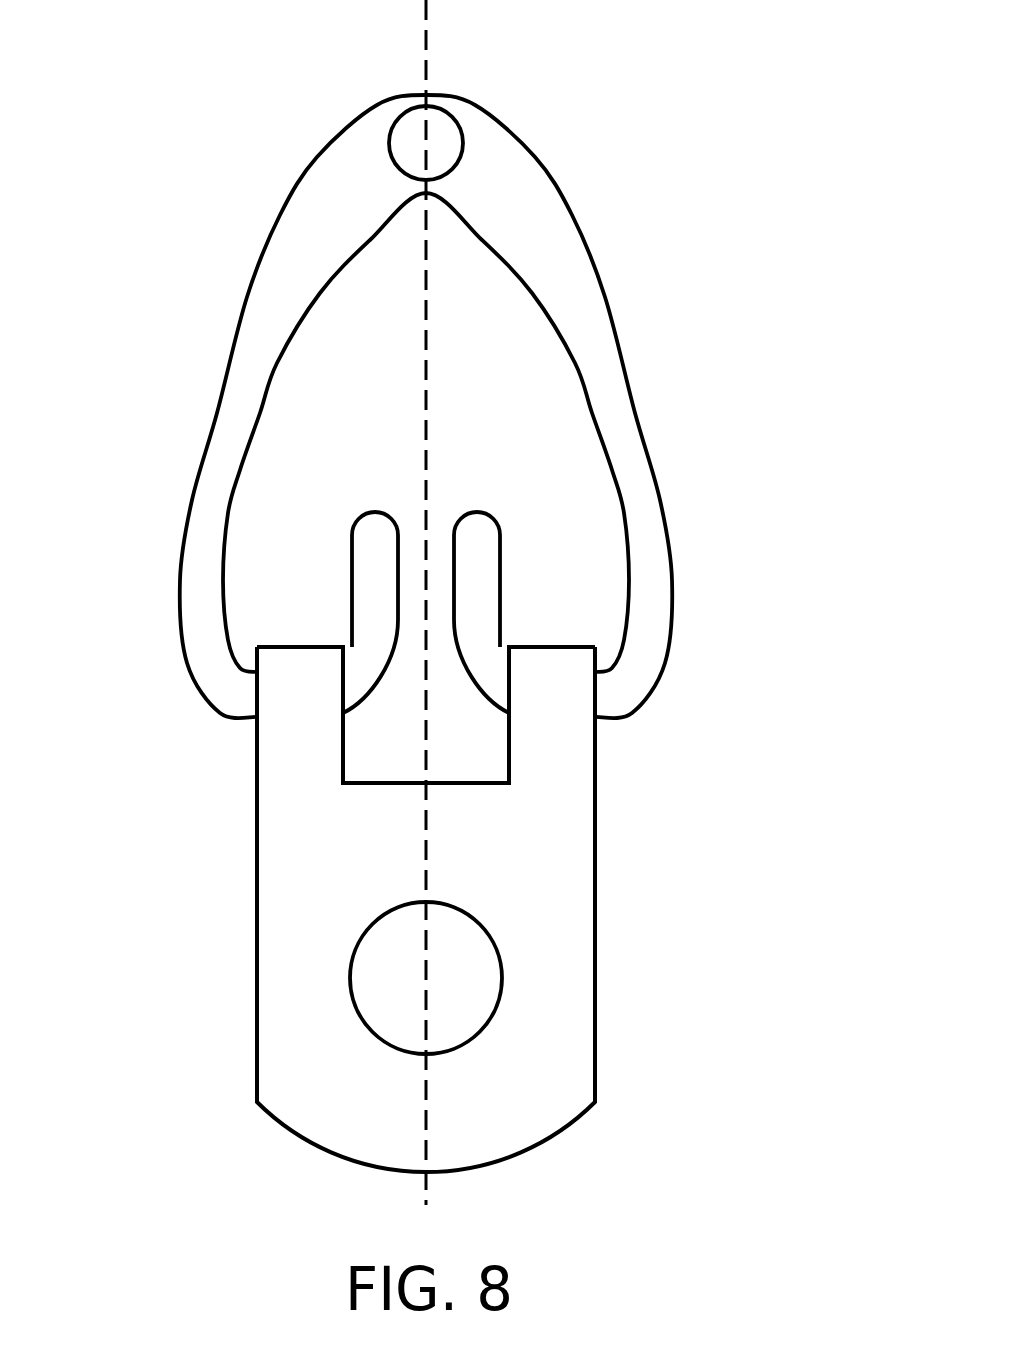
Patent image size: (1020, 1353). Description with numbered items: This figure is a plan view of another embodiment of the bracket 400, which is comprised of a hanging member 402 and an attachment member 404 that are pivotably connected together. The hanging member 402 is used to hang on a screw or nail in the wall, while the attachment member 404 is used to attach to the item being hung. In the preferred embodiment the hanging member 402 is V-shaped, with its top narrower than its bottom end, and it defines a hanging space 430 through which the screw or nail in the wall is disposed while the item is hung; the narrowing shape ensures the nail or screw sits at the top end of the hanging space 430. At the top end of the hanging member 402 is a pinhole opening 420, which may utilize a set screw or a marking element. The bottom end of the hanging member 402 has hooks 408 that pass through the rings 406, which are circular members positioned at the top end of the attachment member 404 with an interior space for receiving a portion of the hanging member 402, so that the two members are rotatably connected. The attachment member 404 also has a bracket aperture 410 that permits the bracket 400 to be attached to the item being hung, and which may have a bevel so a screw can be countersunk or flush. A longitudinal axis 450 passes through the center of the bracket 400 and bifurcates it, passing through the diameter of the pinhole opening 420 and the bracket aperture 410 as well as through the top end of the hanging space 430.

The bracket 400 is at (177, 207).
The hanging member 402 is at (567, 259).
The attachment member 404 is at (577, 1079).
The rings 406 is at (563, 683).
The hooks 408 is at (487, 582).
The bracket aperture 410 is at (457, 978).
The pinhole opening 420 is at (448, 138).
The hanging space 430 is at (327, 412).
The longitudinal axis 450 is at (426, 29).